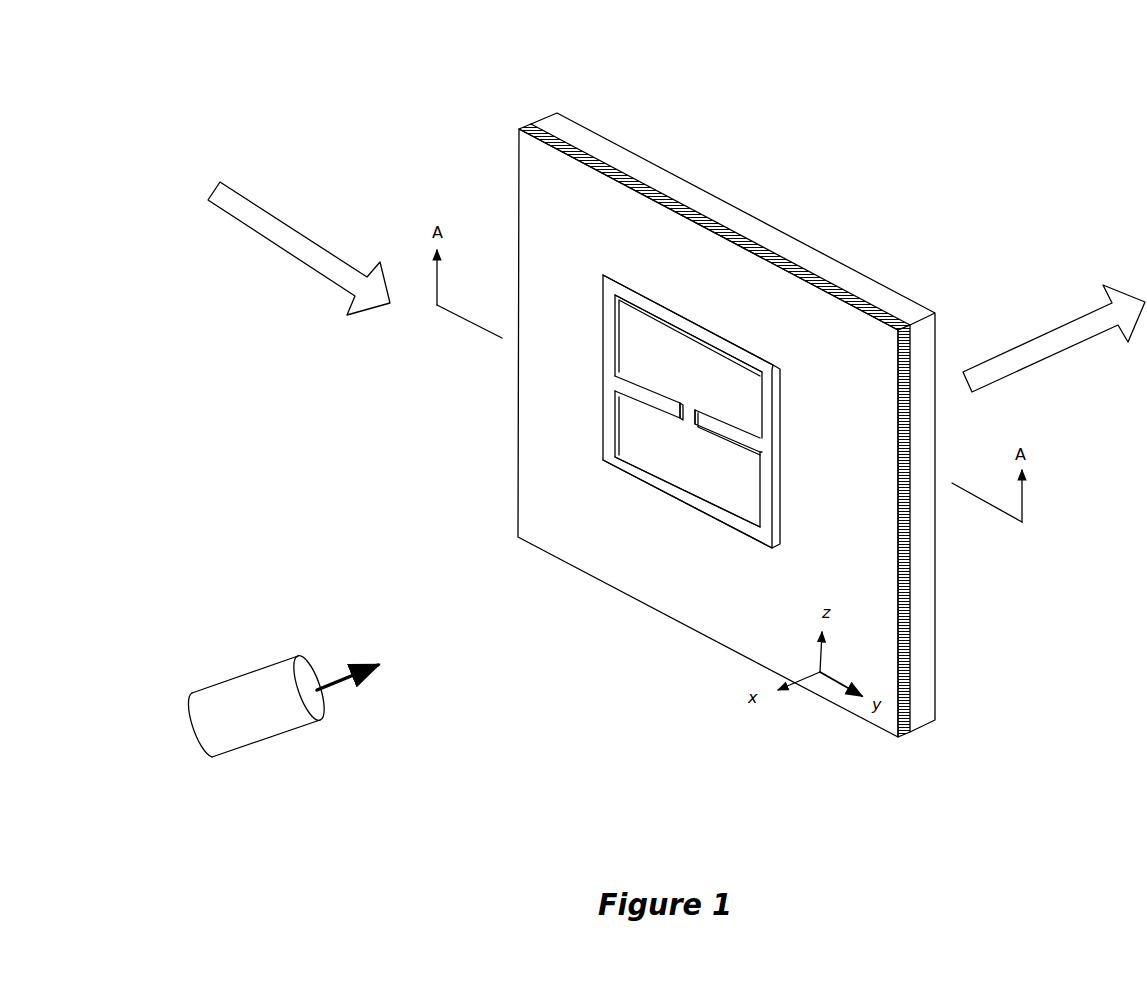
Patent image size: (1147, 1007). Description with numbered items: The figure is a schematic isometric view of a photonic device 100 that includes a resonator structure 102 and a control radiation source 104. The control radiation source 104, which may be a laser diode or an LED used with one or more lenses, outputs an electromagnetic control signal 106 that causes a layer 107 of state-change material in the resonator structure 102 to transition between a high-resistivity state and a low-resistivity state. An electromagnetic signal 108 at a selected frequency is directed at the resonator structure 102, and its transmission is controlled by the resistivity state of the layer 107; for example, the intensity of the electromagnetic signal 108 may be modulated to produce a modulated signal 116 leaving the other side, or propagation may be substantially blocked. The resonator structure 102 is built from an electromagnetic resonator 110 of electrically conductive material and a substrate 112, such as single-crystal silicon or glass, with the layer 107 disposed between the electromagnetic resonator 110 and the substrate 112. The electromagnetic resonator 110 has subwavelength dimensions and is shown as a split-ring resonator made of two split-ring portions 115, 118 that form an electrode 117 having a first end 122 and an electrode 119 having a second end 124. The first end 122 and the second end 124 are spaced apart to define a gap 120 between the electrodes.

The photonic device 100 is at (975, 118).
The resonator structure 102 is at (547, 97).
The control radiation source 104 is at (255, 726).
The electromagnetic control signal 106 is at (355, 678).
The layer of state-change material 107 is at (903, 668).
The electromagnetic signal 108 is at (257, 222).
The electromagnetic resonator 110 is at (605, 413).
The substrate 112 is at (925, 612).
The split-ring portion 115 is at (705, 340).
The modulated signal 116 is at (1062, 338).
The electrode 117 is at (638, 395).
The split-ring portion 118 is at (687, 502).
The electrode 119 is at (733, 438).
The gap 120 is at (688, 422).
The first end 122 is at (685, 402).
The second end 124 is at (700, 410).